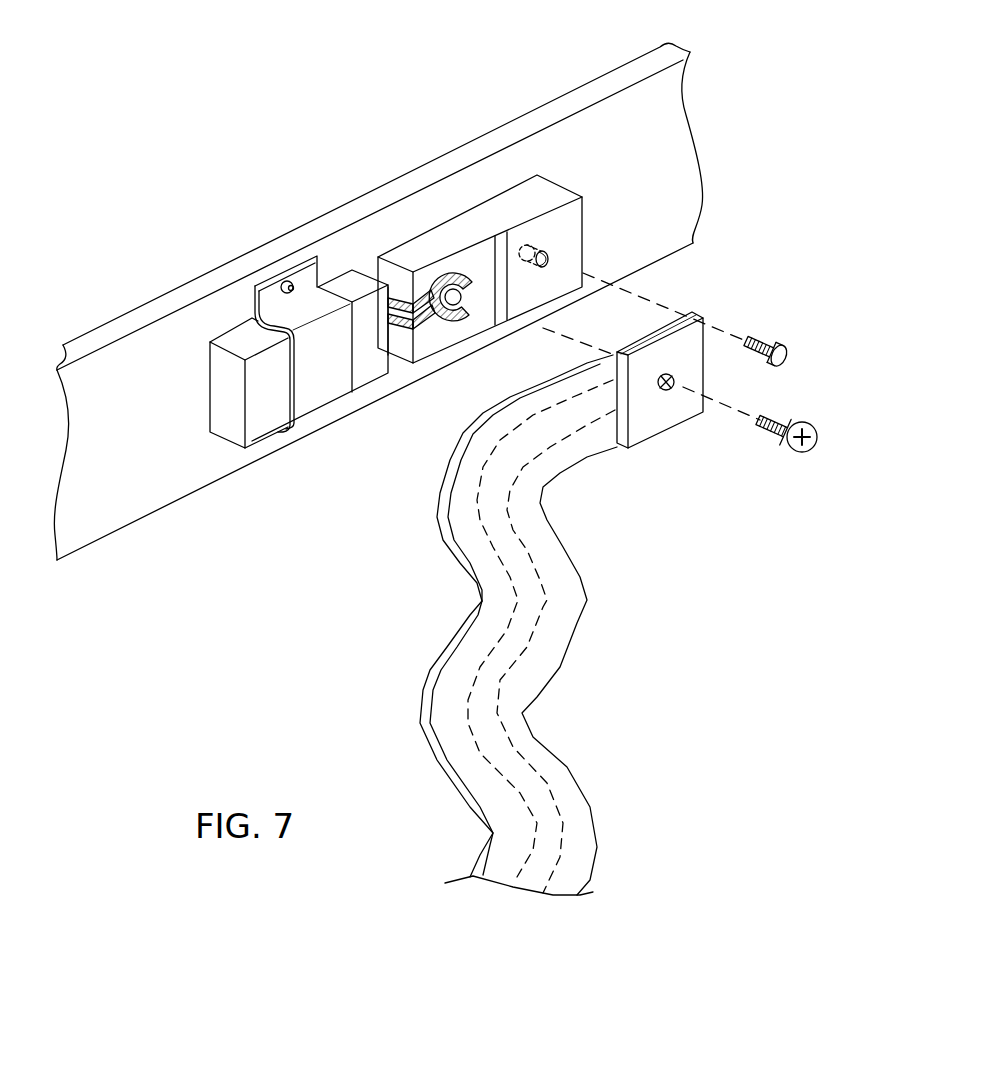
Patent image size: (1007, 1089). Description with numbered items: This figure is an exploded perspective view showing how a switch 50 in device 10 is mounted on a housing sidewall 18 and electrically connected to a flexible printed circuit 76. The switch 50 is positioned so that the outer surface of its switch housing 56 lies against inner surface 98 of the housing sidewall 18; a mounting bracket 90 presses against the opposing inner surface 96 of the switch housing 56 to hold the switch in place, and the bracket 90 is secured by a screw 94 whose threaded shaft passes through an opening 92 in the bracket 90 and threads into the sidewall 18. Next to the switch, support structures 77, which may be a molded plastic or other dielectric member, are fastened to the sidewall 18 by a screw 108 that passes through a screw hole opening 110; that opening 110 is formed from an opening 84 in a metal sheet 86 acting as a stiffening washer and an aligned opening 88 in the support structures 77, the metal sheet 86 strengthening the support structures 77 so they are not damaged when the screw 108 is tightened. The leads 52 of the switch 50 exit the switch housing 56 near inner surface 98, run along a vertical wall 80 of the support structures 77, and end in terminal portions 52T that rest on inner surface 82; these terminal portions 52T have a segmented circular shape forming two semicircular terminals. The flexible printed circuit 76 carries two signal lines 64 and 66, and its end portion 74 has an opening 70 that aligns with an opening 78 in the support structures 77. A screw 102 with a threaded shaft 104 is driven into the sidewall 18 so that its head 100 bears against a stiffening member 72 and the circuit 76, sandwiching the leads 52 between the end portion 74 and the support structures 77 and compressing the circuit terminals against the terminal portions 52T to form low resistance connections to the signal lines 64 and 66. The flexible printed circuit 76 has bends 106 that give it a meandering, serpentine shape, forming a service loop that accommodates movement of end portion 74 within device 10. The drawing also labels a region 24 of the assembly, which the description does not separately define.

The device 10 is at (268, 66).
The housing sidewall 18 is at (108, 323).
The rail mounting surface 24 is at (218, 254).
The switch 50 is at (223, 450).
The leads 52 is at (430, 337).
The terminal portions 52T is at (460, 267).
The switch housing 56 is at (263, 439).
The signal line 64 is at (482, 753).
The signal line 66 is at (523, 760).
The opening 70 is at (665, 405).
The stiffening member 72 is at (705, 378).
The end portion 74 is at (594, 349).
The flexible printed circuit 76 is at (587, 787).
The support structures 77 is at (523, 175).
The opening 78 is at (457, 297).
The vertical wall 80 is at (380, 257).
The inner surface 82 is at (393, 276).
The opening 84 is at (560, 254).
The metal sheet 86 is at (583, 245).
The opening 88 is at (530, 250).
The bracket 90 is at (312, 419).
The opening 92 is at (275, 284).
The screw 94 is at (312, 276).
The inner surface 96 is at (363, 373).
The inner surface 98 is at (147, 496).
The head 100 is at (803, 422).
The screw 102 is at (788, 402).
The shaft 104 is at (766, 438).
The bends 106 is at (459, 602).
The screw 108 is at (779, 337).
The opening 110 is at (569, 262).